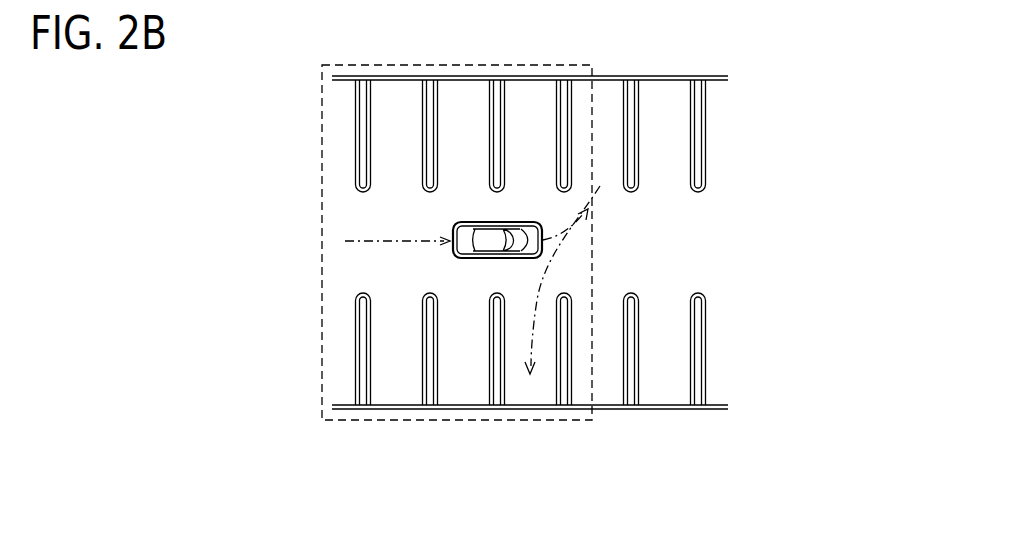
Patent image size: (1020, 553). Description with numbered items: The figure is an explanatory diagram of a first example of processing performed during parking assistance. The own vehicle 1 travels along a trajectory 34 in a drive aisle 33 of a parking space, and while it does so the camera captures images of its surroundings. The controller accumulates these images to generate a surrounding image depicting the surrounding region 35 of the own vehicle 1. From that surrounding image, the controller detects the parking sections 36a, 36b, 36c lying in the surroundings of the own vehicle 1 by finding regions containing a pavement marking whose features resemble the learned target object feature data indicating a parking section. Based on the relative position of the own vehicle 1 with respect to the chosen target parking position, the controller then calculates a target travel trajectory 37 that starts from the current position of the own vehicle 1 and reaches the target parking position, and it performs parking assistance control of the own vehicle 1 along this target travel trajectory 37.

The own vehicle 1 is at (512, 222).
The drive aisle 33 is at (357, 212).
The trajectory 34 is at (390, 236).
The surrounding region 35 is at (592, 275).
The parking section 36a is at (396, 387).
The parking section 36b is at (465, 387).
The parking section 36c is at (531, 387).
The target travel trajectory 37 is at (558, 249).